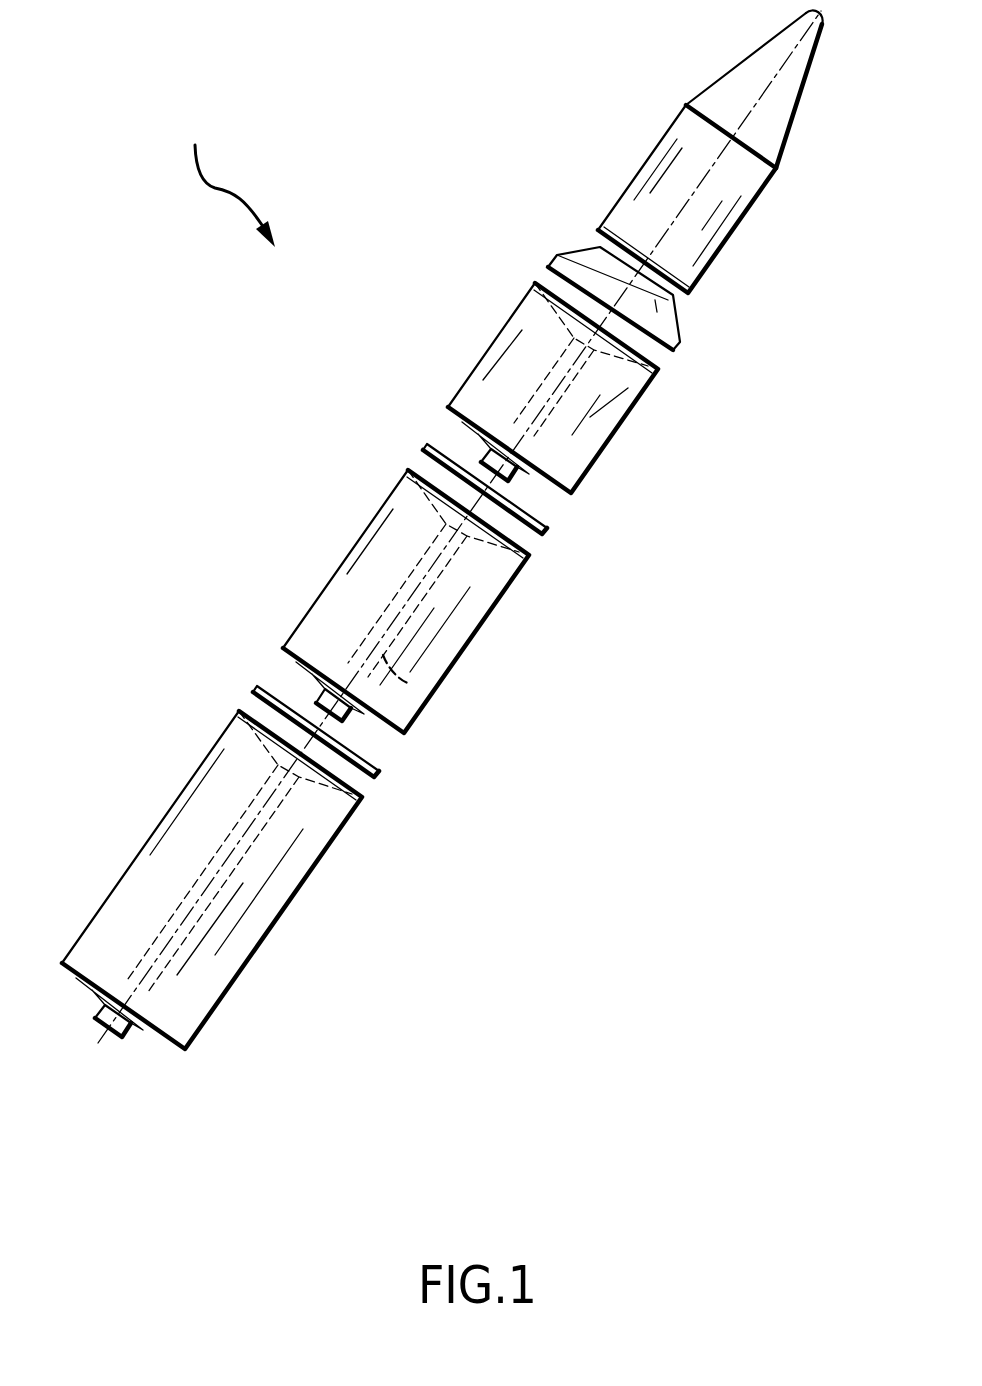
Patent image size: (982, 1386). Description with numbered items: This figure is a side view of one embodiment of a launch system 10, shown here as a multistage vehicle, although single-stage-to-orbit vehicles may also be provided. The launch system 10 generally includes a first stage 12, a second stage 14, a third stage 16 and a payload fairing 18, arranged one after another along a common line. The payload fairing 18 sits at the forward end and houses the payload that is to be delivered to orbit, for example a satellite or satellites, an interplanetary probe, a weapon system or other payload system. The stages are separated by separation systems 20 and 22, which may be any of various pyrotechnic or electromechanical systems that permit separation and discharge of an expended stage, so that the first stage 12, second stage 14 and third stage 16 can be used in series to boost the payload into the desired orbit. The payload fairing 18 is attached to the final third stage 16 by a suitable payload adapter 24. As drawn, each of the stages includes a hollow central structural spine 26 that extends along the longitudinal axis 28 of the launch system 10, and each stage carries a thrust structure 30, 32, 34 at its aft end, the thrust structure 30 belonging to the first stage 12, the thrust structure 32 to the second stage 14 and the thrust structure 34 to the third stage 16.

The launch system 10 is at (459, 527).
The first stage 12 is at (275, 922).
The second stage 14 is at (470, 640).
The third stage 16 is at (612, 437).
The payload fairing 18 is at (742, 222).
The separation system 20 is at (253, 688).
The separation system 22 is at (422, 447).
The payload adapter 24 is at (552, 262).
The hollow central structural spine 26 is at (410, 684).
The longitudinal axis 28 is at (768, 80).
The thrust structure 30 is at (127, 1033).
The thrust structure 32 is at (347, 717).
The thrust structure 34 is at (520, 480).